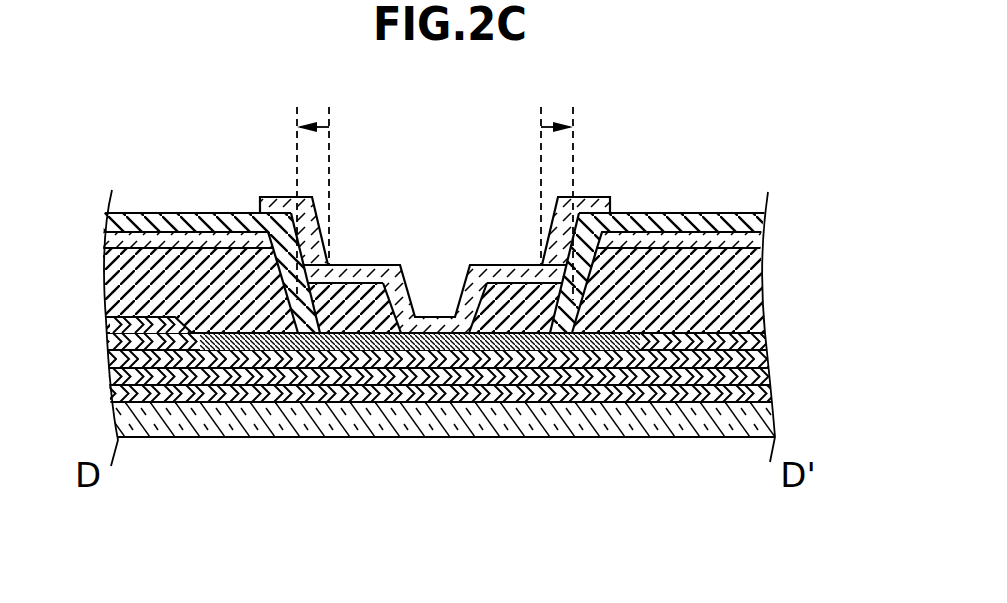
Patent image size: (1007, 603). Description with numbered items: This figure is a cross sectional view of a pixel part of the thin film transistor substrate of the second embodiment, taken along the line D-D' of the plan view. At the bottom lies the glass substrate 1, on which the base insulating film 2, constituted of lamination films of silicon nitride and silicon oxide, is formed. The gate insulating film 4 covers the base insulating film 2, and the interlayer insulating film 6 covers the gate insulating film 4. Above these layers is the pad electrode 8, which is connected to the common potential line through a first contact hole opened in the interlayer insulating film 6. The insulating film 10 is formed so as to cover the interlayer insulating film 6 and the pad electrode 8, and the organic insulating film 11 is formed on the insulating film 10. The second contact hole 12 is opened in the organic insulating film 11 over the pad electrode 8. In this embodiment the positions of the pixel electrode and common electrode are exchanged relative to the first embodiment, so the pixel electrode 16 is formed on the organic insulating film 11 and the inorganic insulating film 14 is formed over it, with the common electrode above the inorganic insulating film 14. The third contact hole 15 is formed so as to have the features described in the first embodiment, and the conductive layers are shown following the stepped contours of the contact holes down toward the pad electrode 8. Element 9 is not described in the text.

The glass substrate 1 is at (679, 413).
The base insulating film 2 is at (772, 395).
The gate insulating film 4 is at (767, 377).
The interlayer insulating film 6 is at (767, 358).
The pad electrode 8 is at (370, 345).
The gate electrode 9 is at (148, 337).
The insulating film 10 is at (757, 343).
The organic insulating film 11 is at (757, 265).
The second contact hole 12 is at (585, 284).
The inorganic insulating film 14 is at (717, 221).
The third contact hole 15 is at (402, 288).
The pixel electrode 16 is at (753, 238).